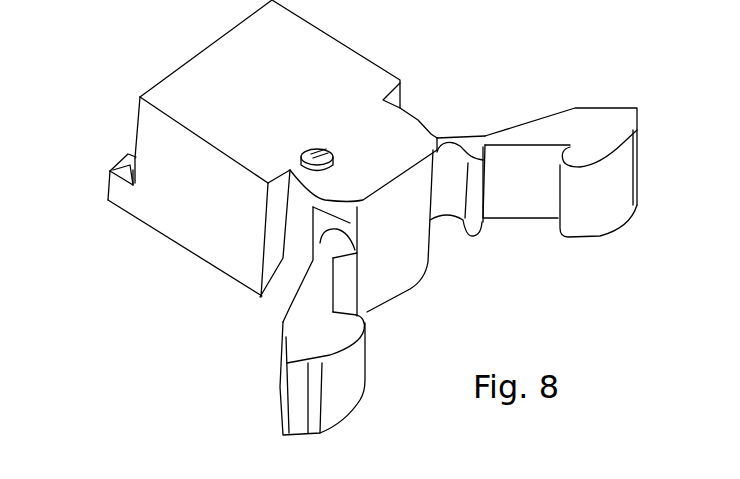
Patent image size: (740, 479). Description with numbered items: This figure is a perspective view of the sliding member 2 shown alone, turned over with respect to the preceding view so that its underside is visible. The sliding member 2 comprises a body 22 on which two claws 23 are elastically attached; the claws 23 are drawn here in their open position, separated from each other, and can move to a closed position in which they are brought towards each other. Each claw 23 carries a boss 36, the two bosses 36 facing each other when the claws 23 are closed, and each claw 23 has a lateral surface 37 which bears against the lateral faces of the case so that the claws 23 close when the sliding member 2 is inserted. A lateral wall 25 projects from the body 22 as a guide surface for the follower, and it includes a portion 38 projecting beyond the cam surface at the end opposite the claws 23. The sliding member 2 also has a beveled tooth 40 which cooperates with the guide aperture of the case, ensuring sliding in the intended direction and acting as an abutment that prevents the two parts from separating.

The sliding member 2 is at (251, 157).
The body 22 is at (181, 207).
The claw 23 is at (593, 132).
The lateral wall 25 is at (249, 278).
The boss 36 is at (585, 235).
The lateral surface 37 is at (455, 135).
The projecting portion 38 is at (110, 187).
The beveled tooth 40 is at (318, 153).